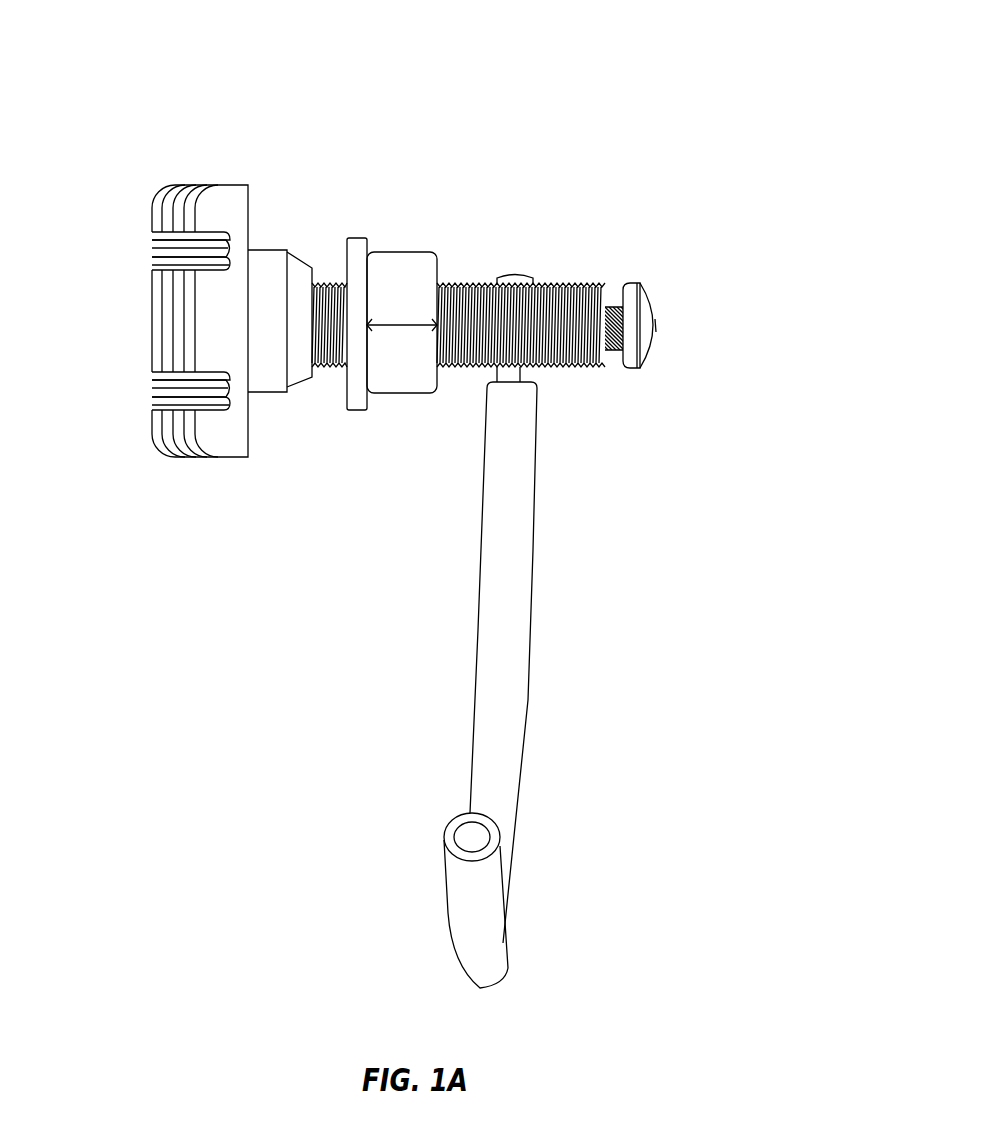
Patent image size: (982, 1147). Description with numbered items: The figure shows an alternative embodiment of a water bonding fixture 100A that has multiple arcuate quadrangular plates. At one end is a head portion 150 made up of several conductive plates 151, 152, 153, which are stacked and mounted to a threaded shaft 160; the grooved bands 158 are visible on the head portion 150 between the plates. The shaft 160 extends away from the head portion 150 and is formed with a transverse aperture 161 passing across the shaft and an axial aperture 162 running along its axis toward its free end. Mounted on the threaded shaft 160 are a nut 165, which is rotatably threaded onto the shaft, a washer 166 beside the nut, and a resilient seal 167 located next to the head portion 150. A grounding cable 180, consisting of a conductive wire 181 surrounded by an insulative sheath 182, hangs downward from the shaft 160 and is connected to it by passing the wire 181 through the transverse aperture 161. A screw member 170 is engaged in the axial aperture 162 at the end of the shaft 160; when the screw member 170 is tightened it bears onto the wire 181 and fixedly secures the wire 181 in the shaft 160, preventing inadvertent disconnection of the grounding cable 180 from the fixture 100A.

The water bonding fixture 100A is at (600, 104).
The head portion 150 is at (174, 150).
The first flange 151 is at (153, 448).
The conductive plate 152 is at (192, 458).
The conductive plate 153 is at (227, 460).
The grooves 158 is at (160, 250).
The threaded shaft 160 is at (457, 288).
The transverse aperture 161 is at (531, 282).
The axial aperture 162 is at (610, 293).
The nut 165 is at (395, 393).
The washer 166 is at (356, 243).
The resilient seal 167 is at (297, 262).
The screw member 170 is at (657, 307).
The grounding cable 180 is at (477, 687).
The conductive wire 181 is at (520, 370).
The insulative sheath 182 is at (535, 507).